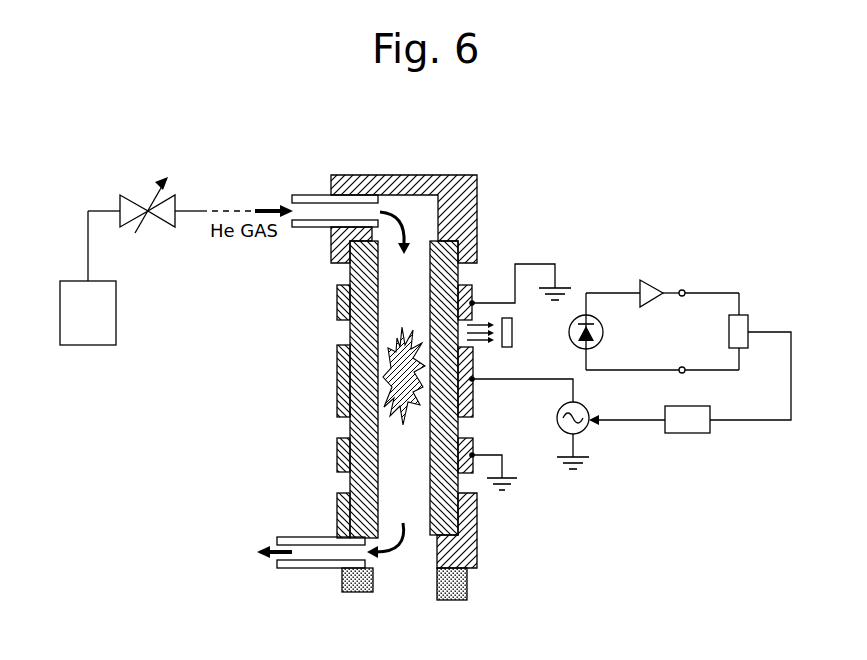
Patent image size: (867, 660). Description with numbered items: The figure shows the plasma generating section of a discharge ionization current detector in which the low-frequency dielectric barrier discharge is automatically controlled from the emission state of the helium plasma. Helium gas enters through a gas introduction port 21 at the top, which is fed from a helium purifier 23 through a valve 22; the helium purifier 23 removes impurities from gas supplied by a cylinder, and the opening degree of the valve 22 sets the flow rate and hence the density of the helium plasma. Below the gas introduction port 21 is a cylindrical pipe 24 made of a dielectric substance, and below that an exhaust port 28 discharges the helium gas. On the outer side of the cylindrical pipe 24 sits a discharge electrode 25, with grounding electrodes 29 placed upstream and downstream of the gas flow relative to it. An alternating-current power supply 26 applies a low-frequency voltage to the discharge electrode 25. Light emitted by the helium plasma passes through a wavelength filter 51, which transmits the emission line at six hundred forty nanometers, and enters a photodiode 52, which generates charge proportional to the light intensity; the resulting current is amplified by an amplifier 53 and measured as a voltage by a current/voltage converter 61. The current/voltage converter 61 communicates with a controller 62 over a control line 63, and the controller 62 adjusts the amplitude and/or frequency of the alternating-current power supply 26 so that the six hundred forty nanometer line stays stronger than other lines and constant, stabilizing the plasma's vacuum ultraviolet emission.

The gas introduction port 21 is at (290, 197).
The valve 22 is at (140, 187).
The helium purifier 23 is at (60, 281).
The cylindrical pipe 24 is at (447, 508).
The discharge electrode 25 is at (474, 417).
The alternating-current power supply 26 is at (589, 428).
The exhaust port 28 is at (277, 537).
The grounding electrodes 29 is at (473, 287).
The wavelength filter 51 is at (512, 346).
The photodiode 52 is at (603, 334).
The amplifier 53 is at (657, 279).
The current/voltage converter 61 is at (748, 316).
The controller 62 is at (710, 434).
The control line 63 is at (791, 374).